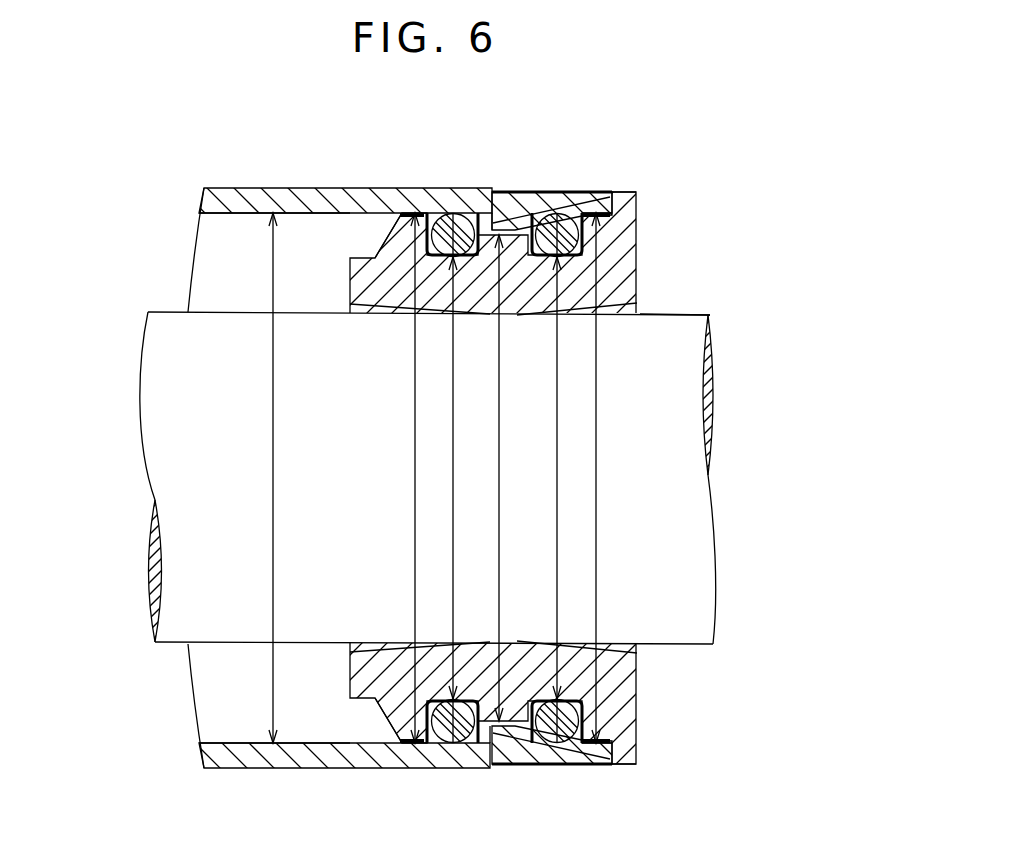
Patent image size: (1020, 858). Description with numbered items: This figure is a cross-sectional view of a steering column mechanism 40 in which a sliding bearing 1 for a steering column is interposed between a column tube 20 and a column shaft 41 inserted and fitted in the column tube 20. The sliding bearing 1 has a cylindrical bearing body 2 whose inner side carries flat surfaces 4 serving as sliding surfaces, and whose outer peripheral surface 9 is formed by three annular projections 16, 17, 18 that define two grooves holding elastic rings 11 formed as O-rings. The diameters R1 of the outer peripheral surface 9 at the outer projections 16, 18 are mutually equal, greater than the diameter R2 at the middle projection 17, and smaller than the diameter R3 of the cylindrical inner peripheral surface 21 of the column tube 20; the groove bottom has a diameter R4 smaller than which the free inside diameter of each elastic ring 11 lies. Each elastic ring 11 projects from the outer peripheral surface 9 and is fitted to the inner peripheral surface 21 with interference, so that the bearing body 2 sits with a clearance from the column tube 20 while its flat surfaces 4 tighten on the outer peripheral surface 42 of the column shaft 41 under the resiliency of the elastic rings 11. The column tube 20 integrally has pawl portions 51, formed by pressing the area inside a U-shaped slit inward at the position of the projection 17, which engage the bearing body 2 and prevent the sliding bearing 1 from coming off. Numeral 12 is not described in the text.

The sliding bearing 1 is at (510, 469).
The bearing body 2 is at (638, 242).
The flat surfaces 4 is at (510, 316).
The outer peripheral surface 9 is at (508, 197).
The elastic rings 11 is at (450, 228).
The outer ring flange 12 is at (620, 198).
The annular projection 16 is at (398, 722).
The annular projection 17 is at (483, 218).
The annular projection 18 is at (588, 750).
The column tube 20 is at (308, 202).
The cylindrical inner peripheral surface 21 is at (235, 224).
The steering column mechanism 40 is at (510, 457).
The column shaft 41 is at (669, 606).
The outer peripheral surface 42 is at (667, 314).
The pawl portions 51 is at (523, 197).
The diameter R1 is at (414, 458).
The diameter R2 is at (500, 450).
The diameter R3 is at (271, 458).
The diameter R4 is at (454, 478).